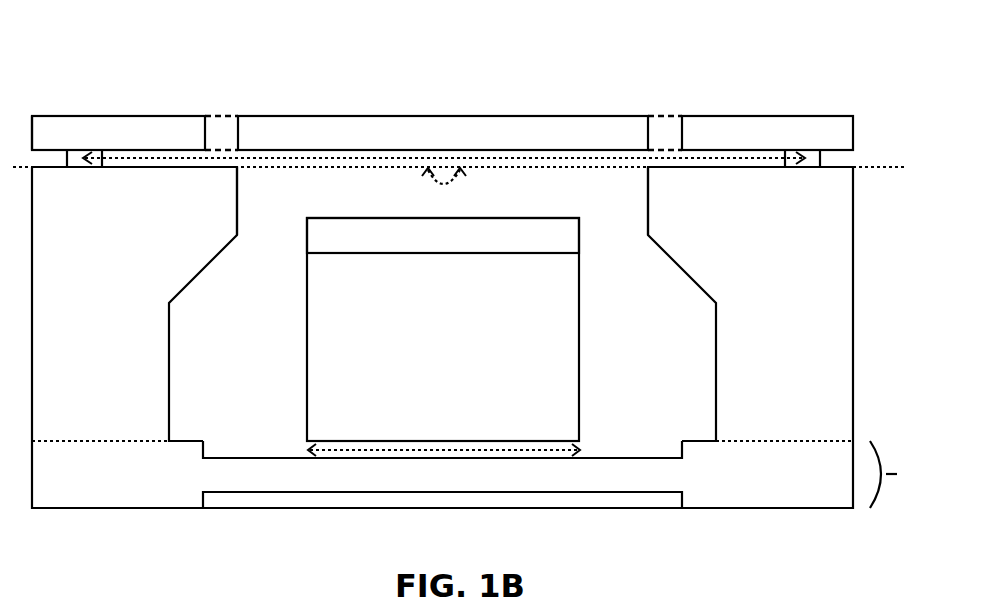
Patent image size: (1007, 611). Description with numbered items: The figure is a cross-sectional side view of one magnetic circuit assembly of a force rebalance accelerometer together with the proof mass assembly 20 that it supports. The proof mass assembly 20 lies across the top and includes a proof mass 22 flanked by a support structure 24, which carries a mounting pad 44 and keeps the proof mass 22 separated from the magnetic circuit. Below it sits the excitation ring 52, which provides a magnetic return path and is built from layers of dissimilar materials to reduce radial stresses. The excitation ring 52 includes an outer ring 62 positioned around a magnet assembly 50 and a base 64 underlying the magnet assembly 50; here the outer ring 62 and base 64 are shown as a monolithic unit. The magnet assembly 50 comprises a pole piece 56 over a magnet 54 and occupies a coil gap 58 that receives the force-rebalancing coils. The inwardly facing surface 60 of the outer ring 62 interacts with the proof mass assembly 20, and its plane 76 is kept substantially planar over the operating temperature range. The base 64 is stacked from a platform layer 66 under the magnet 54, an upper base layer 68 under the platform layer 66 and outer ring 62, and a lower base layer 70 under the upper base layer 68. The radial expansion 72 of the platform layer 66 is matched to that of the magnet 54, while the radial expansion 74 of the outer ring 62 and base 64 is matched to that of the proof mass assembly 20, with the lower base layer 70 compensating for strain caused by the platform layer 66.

The proof mass assembly 20 is at (478, 90).
The proof mass 22 is at (454, 144).
The support structure 24 is at (130, 144).
The mounting pad 44 is at (32, 137).
The magnet assembly 50 is at (398, 329).
The excitation ring 52 is at (878, 268).
The magnet 54 is at (454, 348).
The pole piece 56 is at (454, 247).
The coil gap 58 is at (625, 213).
The inwardly facing surface 60 is at (125, 168).
The outer ring 62 is at (761, 196).
The base 64 is at (565, 480).
The platform layer 66 is at (614, 443).
The upper base layer 68 is at (454, 490).
The lower base layer 70 is at (612, 500).
The radial expansion of platform layer 72 is at (500, 452).
The radial expansion of outer ring and base 74 is at (501, 160).
The plane of surface 76 is at (248, 170).